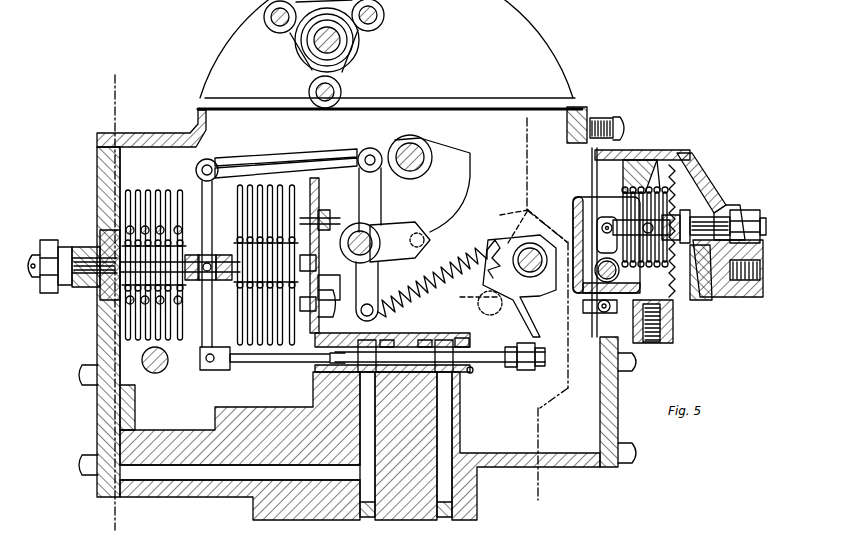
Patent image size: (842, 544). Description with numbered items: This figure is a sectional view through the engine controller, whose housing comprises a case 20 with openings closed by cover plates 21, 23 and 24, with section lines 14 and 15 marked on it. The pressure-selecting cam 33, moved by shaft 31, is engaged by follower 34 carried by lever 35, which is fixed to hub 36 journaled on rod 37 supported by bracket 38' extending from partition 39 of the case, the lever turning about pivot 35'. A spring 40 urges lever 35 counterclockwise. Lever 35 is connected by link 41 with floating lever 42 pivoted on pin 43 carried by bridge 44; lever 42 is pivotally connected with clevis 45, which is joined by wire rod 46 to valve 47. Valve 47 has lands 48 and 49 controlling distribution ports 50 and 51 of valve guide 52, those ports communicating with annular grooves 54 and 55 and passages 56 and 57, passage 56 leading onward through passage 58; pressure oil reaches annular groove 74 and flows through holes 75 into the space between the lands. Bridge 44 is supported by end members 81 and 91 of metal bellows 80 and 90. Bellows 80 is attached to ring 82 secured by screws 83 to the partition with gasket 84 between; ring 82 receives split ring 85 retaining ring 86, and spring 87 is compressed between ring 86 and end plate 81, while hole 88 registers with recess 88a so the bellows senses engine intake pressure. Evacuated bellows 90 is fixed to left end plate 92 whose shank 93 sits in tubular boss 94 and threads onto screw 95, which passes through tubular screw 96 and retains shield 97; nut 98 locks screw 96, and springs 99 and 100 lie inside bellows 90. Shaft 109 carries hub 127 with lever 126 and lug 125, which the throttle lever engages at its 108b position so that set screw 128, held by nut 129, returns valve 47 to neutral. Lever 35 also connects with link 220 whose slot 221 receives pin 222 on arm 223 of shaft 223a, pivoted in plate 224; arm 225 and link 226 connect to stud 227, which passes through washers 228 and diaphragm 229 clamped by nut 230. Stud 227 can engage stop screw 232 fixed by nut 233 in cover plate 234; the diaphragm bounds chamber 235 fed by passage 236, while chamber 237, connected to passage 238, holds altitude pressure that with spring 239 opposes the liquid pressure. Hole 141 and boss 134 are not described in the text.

The section line 14 is at (528, 127).
The section line 15 is at (114, 76).
The case 20 is at (160, 133).
The cover plate 21 is at (560, 58).
The cover plate 23 is at (97, 141).
The cover plate 24 is at (630, 160).
The shaft 31 is at (426, 150).
The pressure-selecting cam 33 is at (470, 153).
The follower 34 is at (428, 232).
The lever 35 is at (370, 149).
The lever pivot 35' is at (347, 304).
The hub 36 is at (388, 230).
The rod 37 is at (362, 232).
The bracket 38' is at (330, 286).
The partition 39 is at (320, 251).
The spring 40 is at (432, 276).
The link 41 is at (300, 154).
The floating lever 42 is at (192, 178).
The pin 43 is at (180, 257).
The bridge 44 is at (183, 348).
The clevis 45 is at (216, 370).
The wire rod 46 is at (282, 364).
The valve 47 is at (500, 352).
The land 48 is at (364, 428).
The land 49 is at (441, 428).
The pressure oil distribution port 50 is at (388, 332).
The pressure oil distribution port 51 is at (460, 331).
The valve guide 52 is at (474, 371).
The annular groove 54 is at (392, 346).
The annular groove 55 is at (427, 331).
The passage 56 is at (375, 420).
The passage 57 is at (452, 414).
The passage 58 is at (186, 490).
The annular groove 74 is at (402, 340).
The holes 75 is at (398, 372).
The metal bellows 80 is at (252, 172).
The end member 81 is at (255, 263).
The ring 82 is at (322, 213).
The screws 83 is at (339, 226).
The gasket 84 is at (326, 210).
The split ring 85 is at (317, 261).
The ring 86 is at (281, 269).
The spring 87 is at (266, 255).
The hole 88 is at (299, 306).
The recess 88a is at (333, 309).
The metal bellows 90 is at (150, 190).
The end member 91 is at (166, 188).
The left end plate 92 is at (128, 190).
The shank 93 is at (104, 229).
The tubular boss 94 is at (82, 247).
The screw 95 is at (30, 258).
The tubular screw 96 is at (42, 242).
The shield 97 is at (45, 290).
The nut 98 is at (62, 288).
The spring 99 is at (72, 416).
The spring 100 is at (100, 310).
The wide open throttle position 108b is at (547, 219).
The shaft 109 is at (532, 277).
The lug 125 is at (485, 280).
The lever 126 is at (510, 240).
The hub 127 is at (505, 279).
The set screw 128 is at (512, 367).
The nut 129 is at (540, 367).
The boss 134 is at (298, 55).
The hole 141 is at (158, 374).
The link 220 is at (522, 300).
The slot 221 is at (595, 313).
The pin 222 is at (613, 394).
The arm 223 is at (606, 280).
The shaft 223a is at (581, 277).
The plate 224 is at (578, 200).
The arm 225 is at (597, 238).
The link 226 is at (606, 215).
The stud 227 is at (642, 230).
The washers 228 is at (684, 152).
The diaphragm 229 is at (672, 165).
The nut 230 is at (700, 200).
The stop screw 232 is at (715, 217).
The nut 233 is at (748, 210).
The supporting cover plate 234 is at (716, 160).
The chamber 235 is at (700, 300).
The passage 236 is at (735, 297).
The chamber 237 is at (673, 318).
The passage 238 is at (654, 345).
The spring 239 is at (659, 158).